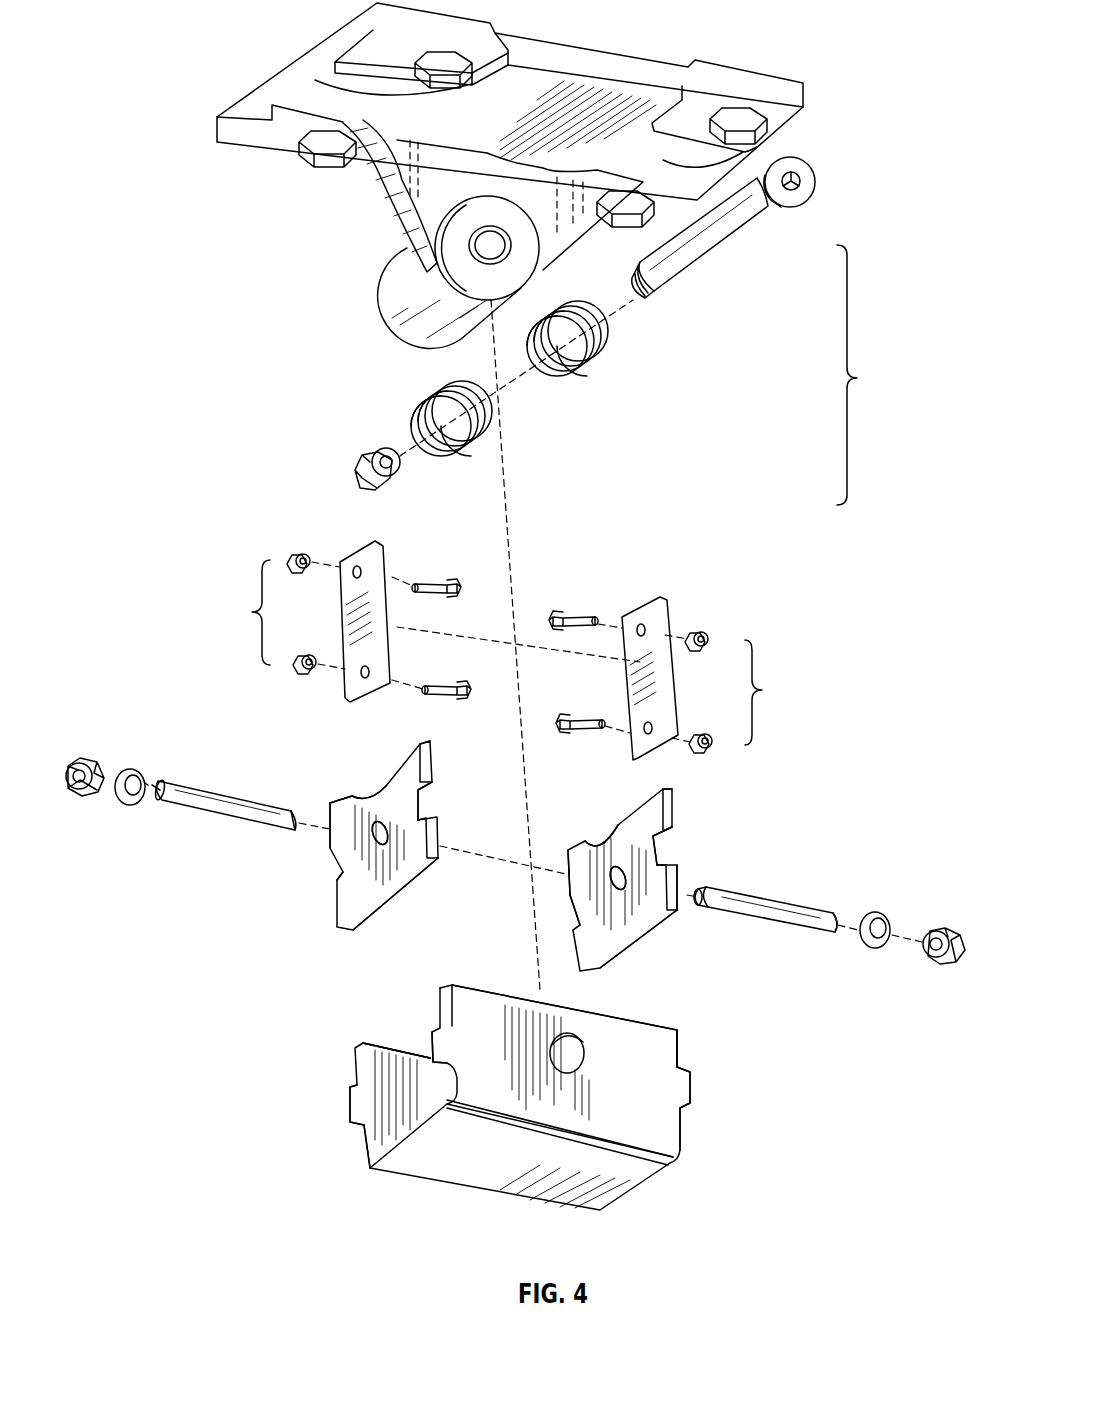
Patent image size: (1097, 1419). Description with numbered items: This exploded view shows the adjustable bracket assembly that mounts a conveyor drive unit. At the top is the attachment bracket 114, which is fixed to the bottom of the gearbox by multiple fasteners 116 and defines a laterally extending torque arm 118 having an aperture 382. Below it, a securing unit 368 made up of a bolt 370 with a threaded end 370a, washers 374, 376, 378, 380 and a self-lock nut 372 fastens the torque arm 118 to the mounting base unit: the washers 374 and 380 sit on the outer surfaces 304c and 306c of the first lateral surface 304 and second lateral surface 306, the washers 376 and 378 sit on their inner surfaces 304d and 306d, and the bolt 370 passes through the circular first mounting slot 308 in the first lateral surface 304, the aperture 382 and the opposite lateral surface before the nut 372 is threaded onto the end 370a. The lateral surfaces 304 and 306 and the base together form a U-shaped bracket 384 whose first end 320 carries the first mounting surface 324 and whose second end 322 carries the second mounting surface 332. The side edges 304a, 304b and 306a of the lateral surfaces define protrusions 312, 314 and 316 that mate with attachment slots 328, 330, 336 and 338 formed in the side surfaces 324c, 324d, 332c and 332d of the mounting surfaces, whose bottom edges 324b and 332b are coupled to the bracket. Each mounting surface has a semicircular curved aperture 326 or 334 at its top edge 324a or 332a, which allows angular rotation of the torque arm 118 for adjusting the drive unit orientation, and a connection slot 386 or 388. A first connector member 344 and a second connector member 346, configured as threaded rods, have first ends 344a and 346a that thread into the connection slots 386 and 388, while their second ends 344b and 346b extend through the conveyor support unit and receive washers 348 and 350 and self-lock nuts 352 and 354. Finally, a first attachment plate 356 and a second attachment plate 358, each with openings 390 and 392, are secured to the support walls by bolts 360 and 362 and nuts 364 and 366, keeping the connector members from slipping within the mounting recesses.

The attachment bracket 114 is at (603, 67).
The fasteners 116 is at (307, 143).
The torque arm 118 is at (430, 205).
The aperture 382 is at (503, 252).
The bolt 370 is at (723, 227).
The end of bolt 370a is at (637, 297).
The nut 372 is at (358, 462).
The washer 374 is at (597, 347).
The washer 376 is at (550, 377).
The washer 378 is at (457, 387).
The washer 380 is at (438, 460).
The securing unit 368 is at (865, 375).
The first attachment plate 356 is at (363, 545).
The second attachment plate 358 is at (653, 610).
The bolts 360 is at (462, 685).
The bolts 362 is at (555, 712).
The nuts 364 is at (242, 612).
The nuts 366 is at (775, 692).
The openings 390 is at (363, 667).
The openings 392 is at (648, 723).
The nut 352 is at (80, 760).
The washer 348 is at (133, 768).
The first connector member 344 is at (222, 782).
The first end of first connector member 344a is at (290, 828).
The second end of first connector member 344b is at (158, 797).
The first mounting surface 324 is at (358, 893).
The top edge 324a is at (348, 795).
The bottom edge 324b is at (423, 877).
The side surface 324c is at (430, 772).
The side surface 324d is at (327, 817).
The first curved aperture 326 is at (370, 790).
The attachment slot 328 is at (427, 807).
The attachment slot 330 is at (340, 870).
The first connection slot 386 is at (373, 843).
The second mounting surface 332 is at (633, 913).
The top edge 332a is at (663, 792).
The bottom edge 332b is at (600, 970).
The side surface 332c is at (677, 885).
The side surface 332d is at (573, 930).
The second curved aperture 334 is at (617, 832).
The attachment slot 336 is at (663, 850).
The attachment slot 338 is at (572, 905).
The second connection slot 388 is at (630, 877).
The second connector member 346 is at (797, 910).
The first end of second connector member 346a is at (710, 917).
The second end of second connector member 346b is at (847, 917).
The washer 350 is at (873, 948).
The nut 354 is at (945, 962).
The second end of U-shaped bracket 322 is at (702, 1018).
The first end of U-shaped bracket 320 is at (340, 1025).
The first lateral surface 304 is at (655, 1087).
The side edge 304a is at (448, 1070).
The side edge 304b is at (678, 1125).
The outer surface 304c is at (645, 1050).
The inner surface 304d is at (428, 990).
The second lateral surface 306 is at (387, 1122).
The side edge 306a is at (370, 1168).
The outer surface 306c is at (330, 1068).
The inner surface 306d is at (397, 1057).
The first mounting slot 308 is at (566, 1062).
The protrusion 312 is at (443, 1046).
The protrusion 314 is at (693, 1090).
The protrusion 316 is at (350, 1100).
The U-shaped bracket 384 is at (818, 1140).